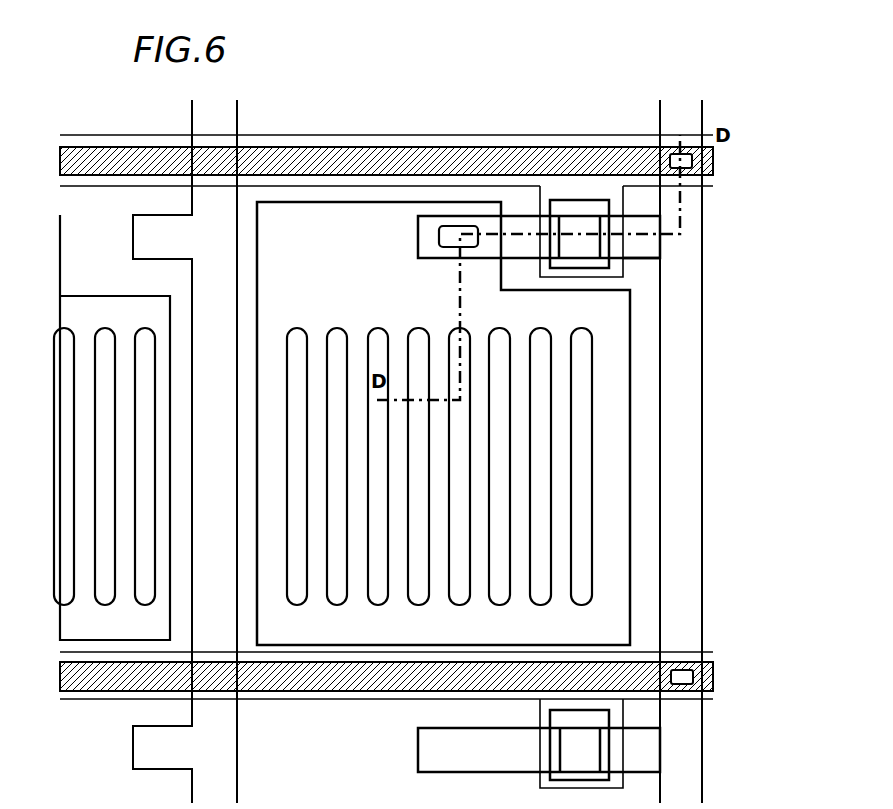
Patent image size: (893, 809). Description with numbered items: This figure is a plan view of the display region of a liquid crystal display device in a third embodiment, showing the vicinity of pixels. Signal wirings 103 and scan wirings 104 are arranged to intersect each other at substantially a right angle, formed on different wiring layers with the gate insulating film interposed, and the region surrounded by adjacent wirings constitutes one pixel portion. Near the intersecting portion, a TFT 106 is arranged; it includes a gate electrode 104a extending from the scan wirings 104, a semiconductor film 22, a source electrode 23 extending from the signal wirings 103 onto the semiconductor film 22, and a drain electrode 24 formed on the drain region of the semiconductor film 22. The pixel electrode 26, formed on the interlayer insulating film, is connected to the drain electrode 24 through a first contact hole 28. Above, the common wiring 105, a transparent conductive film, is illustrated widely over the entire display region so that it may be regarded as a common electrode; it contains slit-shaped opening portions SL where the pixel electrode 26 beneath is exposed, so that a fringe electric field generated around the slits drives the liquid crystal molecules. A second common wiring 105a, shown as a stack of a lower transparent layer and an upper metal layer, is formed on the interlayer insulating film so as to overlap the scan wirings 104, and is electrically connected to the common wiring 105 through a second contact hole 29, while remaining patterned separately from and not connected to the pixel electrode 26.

The signal wirings 103 is at (660, 113).
The scan wirings 104 is at (180, 140).
The gate electrode 104a is at (590, 272).
The common wiring 105 is at (250, 598).
The second common wiring 105a is at (372, 147).
The TFT 106 is at (632, 267).
The semiconductor film 22 is at (565, 205).
The source electrode 23 is at (653, 218).
The drain electrode 24 is at (515, 225).
The pixel electrode 26 is at (390, 223).
The first contact hole 28 is at (457, 234).
The second contact hole 29 is at (667, 148).
The opening portion SL is at (582, 383).